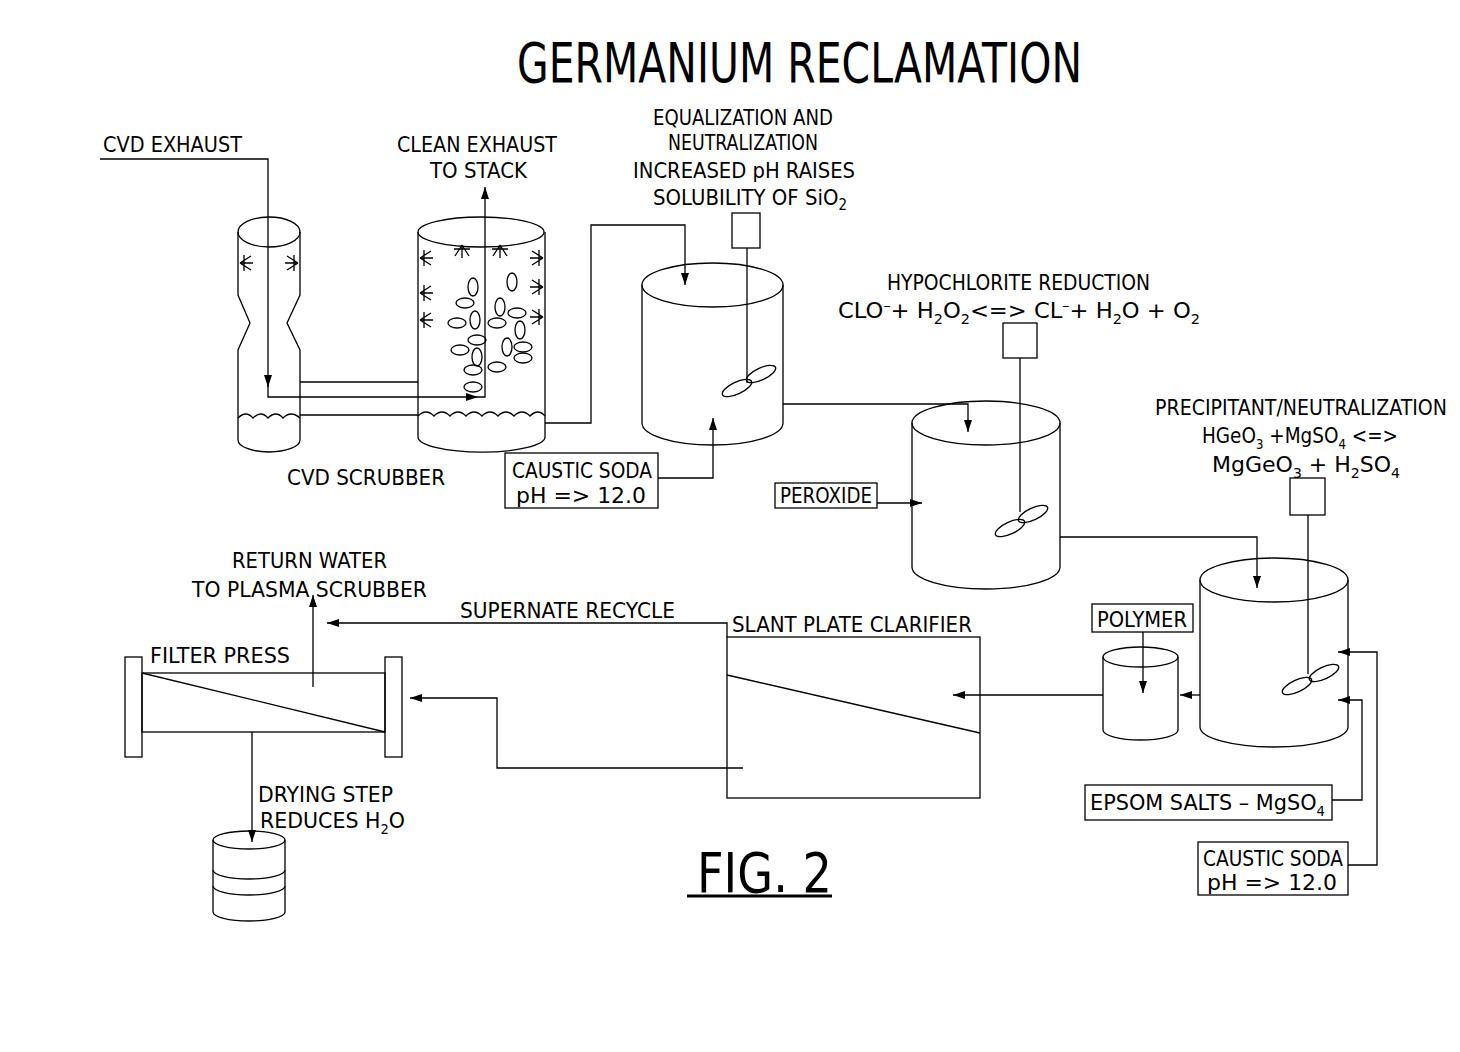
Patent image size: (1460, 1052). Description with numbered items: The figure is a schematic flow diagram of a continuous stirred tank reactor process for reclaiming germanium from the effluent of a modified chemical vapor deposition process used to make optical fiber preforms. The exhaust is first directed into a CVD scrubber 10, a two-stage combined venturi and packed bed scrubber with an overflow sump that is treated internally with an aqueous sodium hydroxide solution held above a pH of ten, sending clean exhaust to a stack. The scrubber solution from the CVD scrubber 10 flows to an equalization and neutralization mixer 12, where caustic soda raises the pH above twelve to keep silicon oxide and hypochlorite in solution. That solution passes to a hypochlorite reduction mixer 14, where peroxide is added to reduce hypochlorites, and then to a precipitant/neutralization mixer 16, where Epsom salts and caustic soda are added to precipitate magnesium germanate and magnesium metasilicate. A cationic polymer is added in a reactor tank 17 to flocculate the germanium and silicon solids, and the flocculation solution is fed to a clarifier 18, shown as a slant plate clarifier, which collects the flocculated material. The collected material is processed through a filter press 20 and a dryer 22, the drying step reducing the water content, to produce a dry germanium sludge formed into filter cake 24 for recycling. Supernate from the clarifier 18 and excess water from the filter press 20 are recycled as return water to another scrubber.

The CVD scrubber 10 is at (290, 483).
The equalization and neutralization mixer 12 is at (868, 227).
The hypochlorite reduction mixer 14 is at (1124, 396).
The precipitant/neutralization mixer 16 is at (1383, 552).
The reactor tank 17 is at (1130, 734).
The clarifier 18 is at (900, 780).
The filter press 20 is at (254, 709).
The dryer 22 is at (197, 740).
The filter cake 24 is at (285, 883).